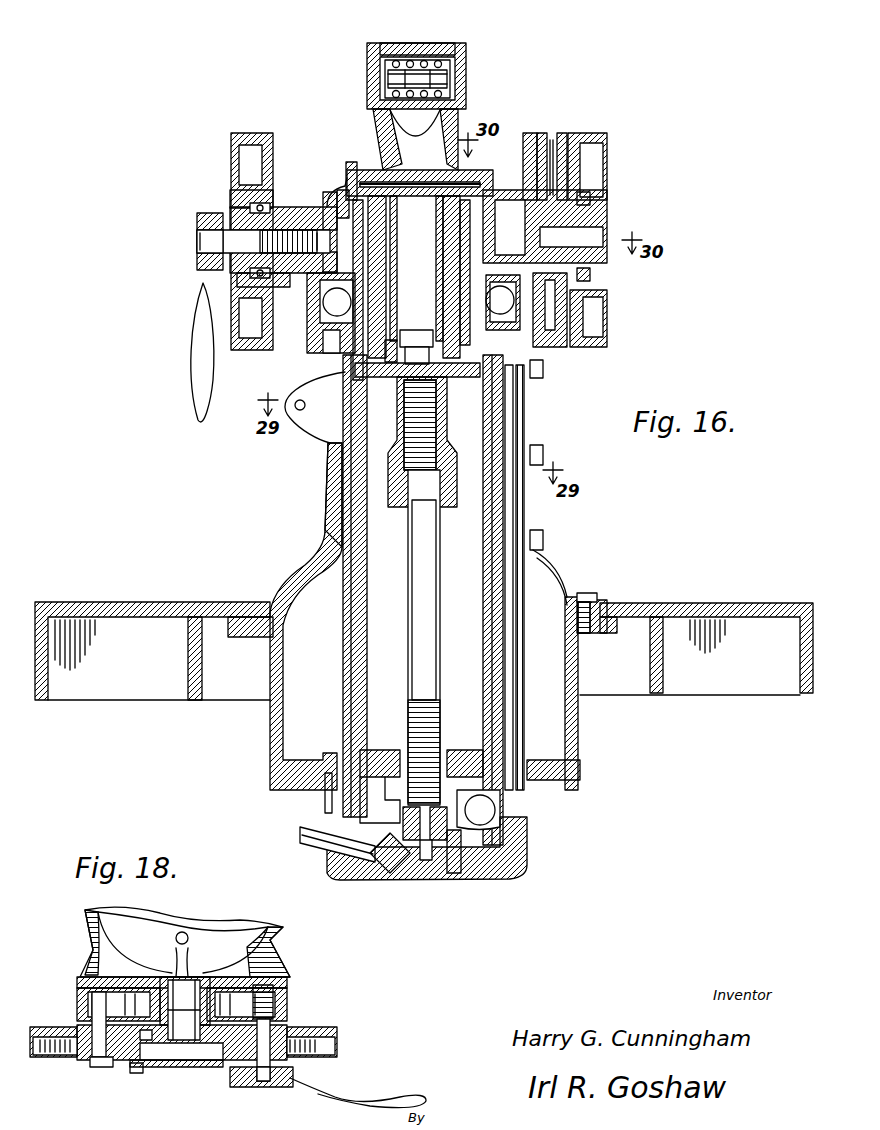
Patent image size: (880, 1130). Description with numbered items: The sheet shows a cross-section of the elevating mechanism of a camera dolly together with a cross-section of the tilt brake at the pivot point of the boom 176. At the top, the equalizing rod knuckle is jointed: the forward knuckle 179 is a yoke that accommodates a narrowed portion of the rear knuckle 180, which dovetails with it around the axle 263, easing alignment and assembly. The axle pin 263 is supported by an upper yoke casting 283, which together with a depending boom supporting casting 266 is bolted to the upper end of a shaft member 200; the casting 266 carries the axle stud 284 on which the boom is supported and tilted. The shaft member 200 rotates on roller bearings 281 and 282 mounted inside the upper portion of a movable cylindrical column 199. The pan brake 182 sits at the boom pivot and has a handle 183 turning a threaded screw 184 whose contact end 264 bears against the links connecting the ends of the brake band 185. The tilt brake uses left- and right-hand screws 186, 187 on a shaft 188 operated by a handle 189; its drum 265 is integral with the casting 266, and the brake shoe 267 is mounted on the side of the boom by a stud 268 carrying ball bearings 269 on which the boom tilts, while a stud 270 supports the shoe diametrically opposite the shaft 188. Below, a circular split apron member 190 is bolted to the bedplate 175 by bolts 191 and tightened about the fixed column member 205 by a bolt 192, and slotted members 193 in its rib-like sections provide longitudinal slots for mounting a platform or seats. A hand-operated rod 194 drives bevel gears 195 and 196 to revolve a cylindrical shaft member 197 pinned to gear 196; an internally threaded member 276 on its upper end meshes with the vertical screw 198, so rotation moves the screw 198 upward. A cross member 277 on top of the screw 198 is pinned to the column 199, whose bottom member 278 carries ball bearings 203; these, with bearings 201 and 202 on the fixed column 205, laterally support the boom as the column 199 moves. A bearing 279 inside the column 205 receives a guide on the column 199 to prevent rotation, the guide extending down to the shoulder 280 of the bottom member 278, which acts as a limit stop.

In FIG. 16, the bedplate 175 is at (151, 596).
In FIG. 16, the boom 176 is at (258, 122).
In FIG. 18, the boom 176 is at (339, 1034).
In FIG. 16, the forward knuckle 179 is at (400, 44).
In FIG. 16, the rear knuckle 180 is at (423, 43).
In FIG. 16, the pan brake 182 is at (205, 236).
In FIG. 16, the handle 183 is at (197, 336).
In FIG. 16, the threaded screw 184 is at (295, 208).
In FIG. 16, the brake band 185 is at (368, 156).
In FIG. 18, the left-hand screw 186 is at (287, 980).
In FIG. 18, the right-hand screw 187 is at (275, 998).
In FIG. 18, the shaft 188 is at (272, 1024).
In FIG. 18, the handle 189 is at (394, 1093).
In FIG. 16, the circular split apron member 190 is at (333, 515).
In FIG. 16, the bolts 191 is at (592, 592).
In FIG. 16, the bolt 192 is at (300, 416).
In FIG. 16, the slotted members 193 is at (530, 441).
In FIG. 16, the hand-operated rod 194 is at (312, 842).
In FIG. 16, the bevel gear 195 is at (390, 870).
In FIG. 16, the bevel gear 196 is at (454, 870).
In FIG. 16, the cylindrical shaft member 197 is at (440, 668).
In FIG. 16, the vertical screw 198 is at (404, 420).
In FIG. 16, the cylindrical column 199 is at (360, 562).
In FIG. 16, the shaft member 200 is at (419, 277).
In FIG. 16, the bearing 201 is at (320, 328).
In FIG. 16, the bearing 202 is at (486, 300).
In FIG. 16, the ball bearings 203 is at (498, 810).
In FIG. 16, the column member 205 is at (338, 468).
In FIG. 16, the axle 263 is at (384, 76).
In FIG. 16, the contact end 264 is at (328, 184).
In FIG. 16, the drum 265 is at (553, 128).
In FIG. 18, the drum 265 is at (78, 983).
In FIG. 16, the boom supporting casting 266 is at (300, 207).
In FIG. 18, the boom supporting casting 266 is at (205, 925).
In FIG. 16, the brake shoe 267 is at (565, 136).
In FIG. 18, the brake shoe 267 is at (78, 993).
In FIG. 16, the stud 268 is at (608, 230).
In FIG. 18, the stud 268 is at (185, 1045).
In FIG. 16, the ball bearings 269 is at (605, 192).
In FIG. 18, the ball bearings 269 is at (146, 1062).
In FIG. 18, the stud 270 is at (100, 1063).
In FIG. 16, the internally threaded member 276 is at (442, 430).
In FIG. 16, the cross member 277 is at (401, 347).
In FIG. 16, the bottom member 278 is at (382, 753).
In FIG. 16, the bearing 279 is at (333, 362).
In FIG. 16, the shoulder 280 is at (345, 793).
In FIG. 16, the roller bearing 281 is at (436, 236).
In FIG. 16, the roller bearing 282 is at (398, 338).
In FIG. 16, the upper yoke casting 283 is at (458, 120).
In FIG. 16, the axle stud 284 is at (298, 278).